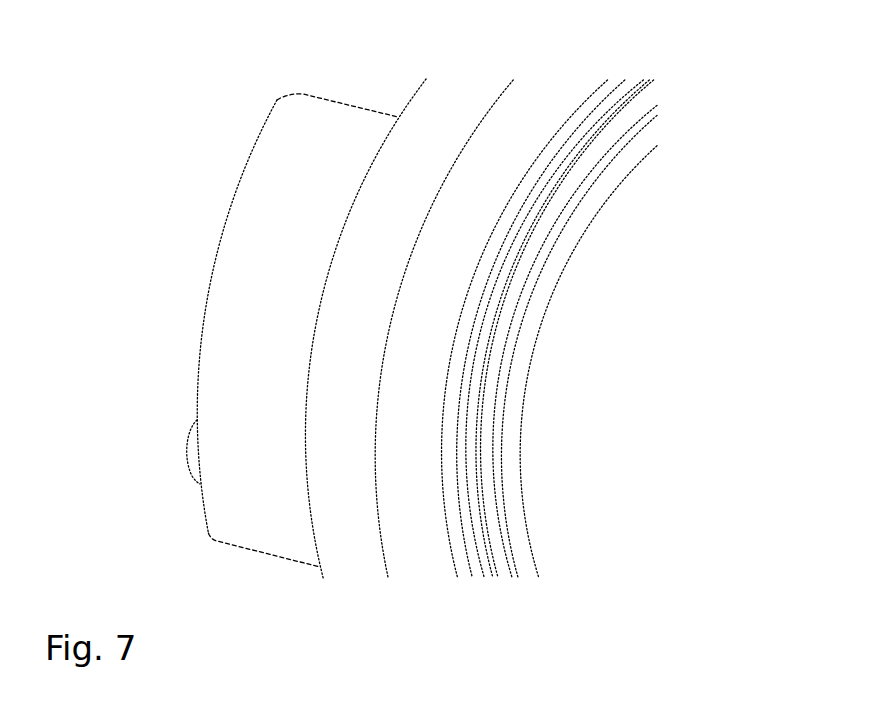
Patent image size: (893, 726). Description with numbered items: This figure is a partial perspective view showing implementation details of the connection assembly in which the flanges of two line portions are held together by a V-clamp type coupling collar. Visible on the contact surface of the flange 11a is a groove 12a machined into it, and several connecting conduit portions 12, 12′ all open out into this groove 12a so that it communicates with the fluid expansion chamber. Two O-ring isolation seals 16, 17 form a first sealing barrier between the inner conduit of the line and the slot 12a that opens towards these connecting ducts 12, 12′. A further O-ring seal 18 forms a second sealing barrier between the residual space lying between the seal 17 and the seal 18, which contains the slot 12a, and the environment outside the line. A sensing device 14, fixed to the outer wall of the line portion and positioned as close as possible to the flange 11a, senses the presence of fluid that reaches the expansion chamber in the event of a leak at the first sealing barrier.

The sensing device 14 is at (292, 138).
The flange 11a is at (366, 293).
The O-ring seal 18 is at (597, 106).
The groove 12a is at (474, 564).
The connecting conduit portion 12 is at (470, 418).
The connecting conduit portion 12′ is at (480, 340).
The O-ring isolation seal 17 is at (490, 478).
The O-ring isolation seal 16 is at (627, 160).